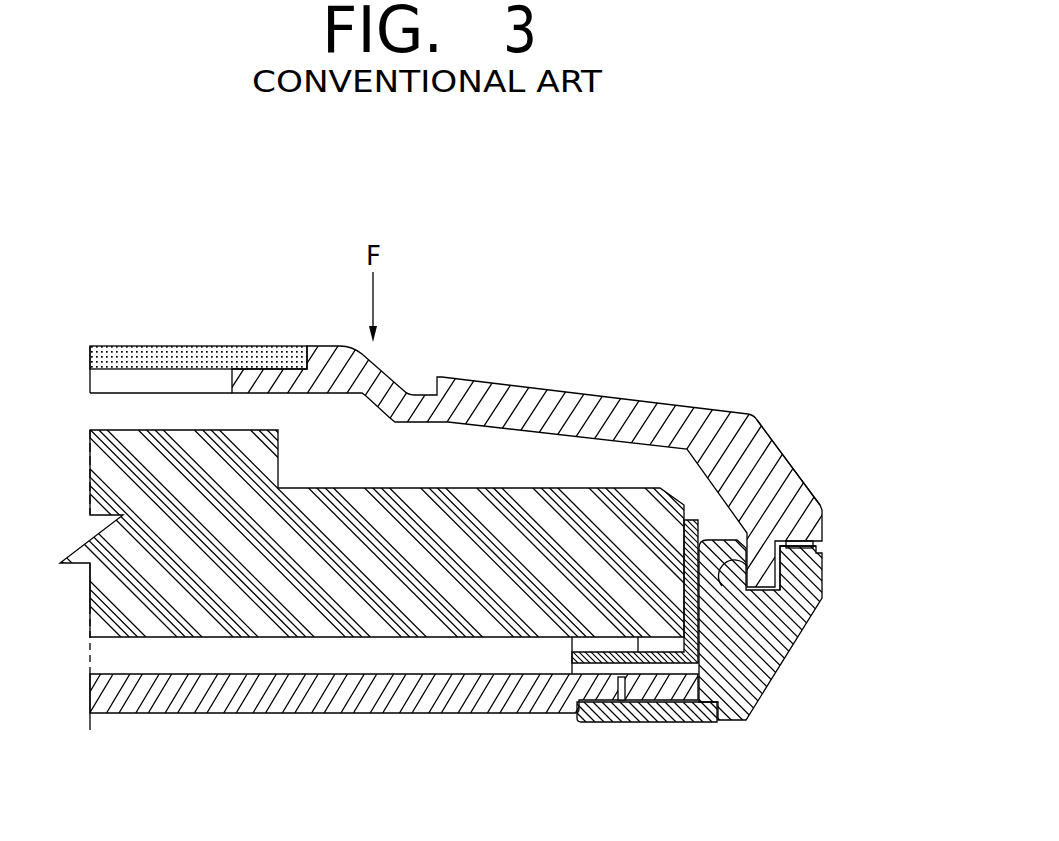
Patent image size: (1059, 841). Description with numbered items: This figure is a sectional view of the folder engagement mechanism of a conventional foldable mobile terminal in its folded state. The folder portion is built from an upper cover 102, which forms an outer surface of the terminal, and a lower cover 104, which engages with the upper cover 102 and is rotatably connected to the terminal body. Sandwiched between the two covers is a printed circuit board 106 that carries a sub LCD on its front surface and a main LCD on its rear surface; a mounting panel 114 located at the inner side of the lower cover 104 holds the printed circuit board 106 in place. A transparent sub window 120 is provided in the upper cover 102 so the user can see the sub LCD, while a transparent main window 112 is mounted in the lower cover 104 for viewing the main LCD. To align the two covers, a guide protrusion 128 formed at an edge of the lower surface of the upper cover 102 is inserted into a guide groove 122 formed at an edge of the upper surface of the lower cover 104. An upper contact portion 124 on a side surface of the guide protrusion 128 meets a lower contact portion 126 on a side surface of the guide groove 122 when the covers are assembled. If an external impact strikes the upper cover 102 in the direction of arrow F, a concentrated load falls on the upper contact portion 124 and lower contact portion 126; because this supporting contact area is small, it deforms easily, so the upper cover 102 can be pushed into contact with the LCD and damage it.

The upper cover 102 is at (490, 392).
The lower cover 104 is at (765, 662).
The printed circuit board 106 is at (237, 612).
The main window 112 is at (352, 703).
The mounting panel 114 is at (667, 660).
The sub window 120 is at (170, 352).
The guide groove 122 is at (745, 604).
The upper contact portion 124 is at (806, 492).
The lower contact portion 126 is at (808, 577).
The guide protrusion 128 is at (782, 560).